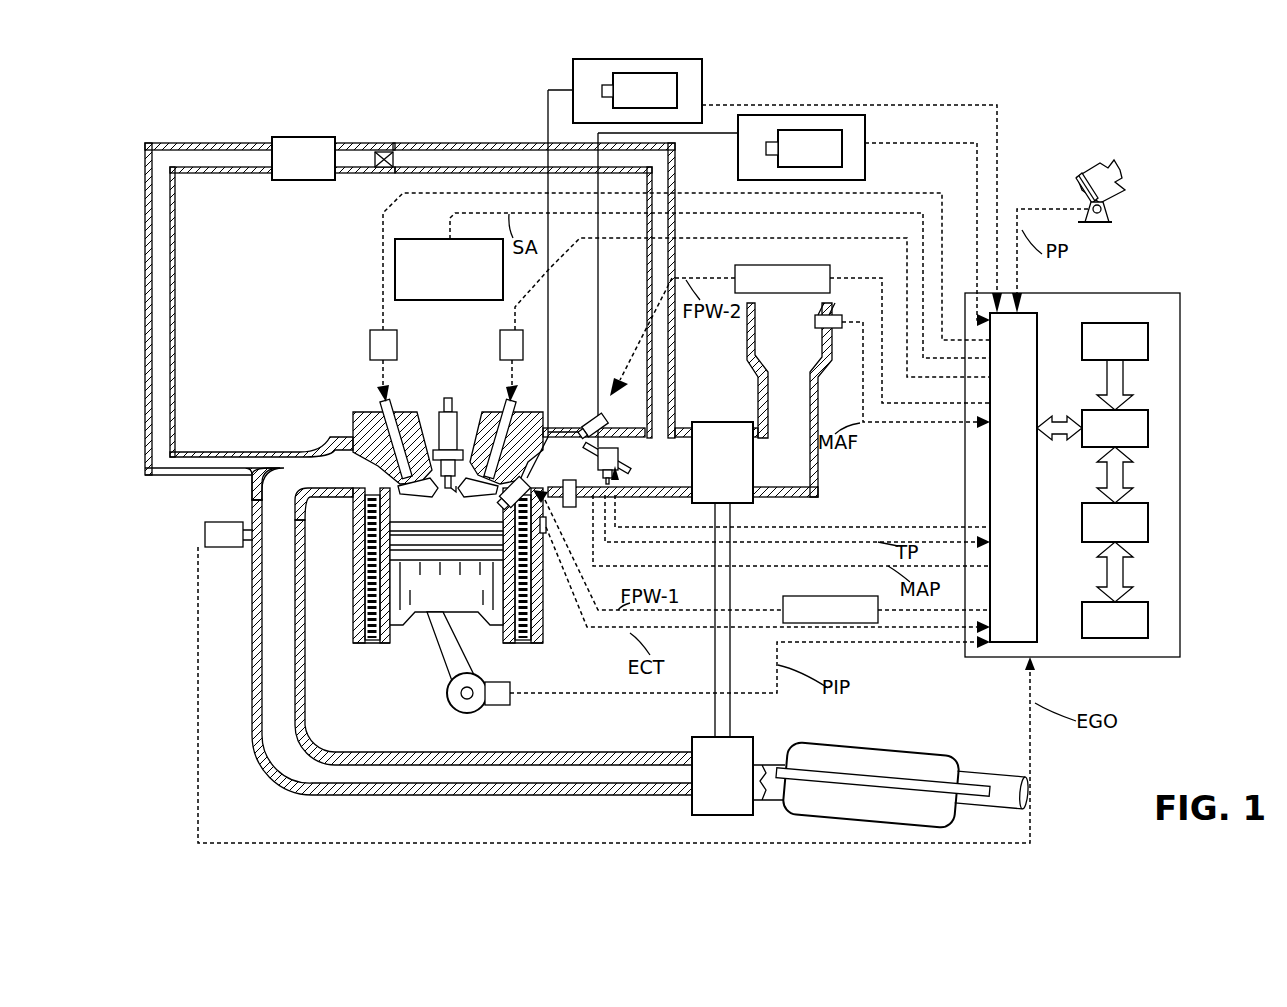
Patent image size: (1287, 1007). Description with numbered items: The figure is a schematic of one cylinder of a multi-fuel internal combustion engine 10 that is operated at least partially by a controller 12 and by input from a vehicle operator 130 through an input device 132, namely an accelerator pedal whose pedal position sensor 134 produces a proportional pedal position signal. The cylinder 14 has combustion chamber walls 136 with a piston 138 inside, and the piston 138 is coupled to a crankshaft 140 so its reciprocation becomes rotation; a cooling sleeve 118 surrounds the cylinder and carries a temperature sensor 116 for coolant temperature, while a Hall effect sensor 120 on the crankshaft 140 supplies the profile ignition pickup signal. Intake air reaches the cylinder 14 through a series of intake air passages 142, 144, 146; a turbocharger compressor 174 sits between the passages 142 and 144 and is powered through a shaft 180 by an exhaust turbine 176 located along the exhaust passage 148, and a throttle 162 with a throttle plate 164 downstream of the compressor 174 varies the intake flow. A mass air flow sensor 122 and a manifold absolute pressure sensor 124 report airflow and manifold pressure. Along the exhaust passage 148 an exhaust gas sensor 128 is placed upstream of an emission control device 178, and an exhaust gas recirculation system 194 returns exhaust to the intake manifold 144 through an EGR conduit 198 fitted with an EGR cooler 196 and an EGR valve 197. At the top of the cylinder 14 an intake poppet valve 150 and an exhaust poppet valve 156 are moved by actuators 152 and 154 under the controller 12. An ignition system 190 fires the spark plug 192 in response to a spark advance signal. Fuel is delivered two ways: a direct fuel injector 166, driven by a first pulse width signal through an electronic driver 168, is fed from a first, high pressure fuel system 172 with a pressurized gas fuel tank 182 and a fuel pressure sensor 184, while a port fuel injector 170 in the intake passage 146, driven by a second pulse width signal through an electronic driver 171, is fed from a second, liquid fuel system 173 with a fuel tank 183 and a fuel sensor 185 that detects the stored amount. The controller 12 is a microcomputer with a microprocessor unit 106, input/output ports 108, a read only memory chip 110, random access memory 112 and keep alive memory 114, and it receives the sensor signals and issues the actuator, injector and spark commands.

The internal combustion engine 10 is at (286, 366).
The controller 12 is at (1180, 298).
The cylinder 14 is at (360, 533).
The microprocessor unit 106 is at (1150, 425).
The input/output ports 108 is at (1040, 315).
The read only memory chip 110 is at (1150, 337).
The random access memory 112 is at (1150, 521).
The keep alive memory 114 is at (1150, 621).
The temperature sensor 116 is at (548, 533).
The cooling sleeve 118 is at (527, 612).
The Hall effect sensor 120 is at (500, 705).
The mass air flow sensor 122 is at (838, 315).
The MAP sensor 124 is at (575, 508).
The exhaust gas sensor 128 is at (205, 525).
The vehicle operator 130 is at (1123, 173).
The input device 132 is at (1080, 186).
The pedal position sensor 134 is at (1110, 208).
The combustion chamber walls 136 is at (393, 643).
The piston 138 is at (432, 608).
The crankshaft 140 is at (458, 710).
The intake air passage 142 is at (776, 347).
The intake passage 144 is at (646, 471).
The intake air passage 146 is at (552, 471).
The exhaust passage 148 is at (312, 479).
The intake poppet valve 150 is at (458, 440).
The actuator 152 is at (500, 342).
The actuator 154 is at (375, 330).
The exhaust poppet valve 156 is at (400, 476).
The throttle 162 is at (612, 448).
The throttle plate 164 is at (582, 432).
The fuel injector 166 is at (521, 489).
The electronic driver 168 is at (783, 602).
The fuel injector 170 is at (594, 420).
The electronic driver 171 is at (735, 275).
The first fuel system 172 is at (702, 66).
The second fuel system 173 is at (835, 115).
The compressor 174 is at (705, 422).
The exhaust turbine 176 is at (692, 810).
The emission control device 178 is at (868, 748).
The shaft 180 is at (732, 708).
The pressurized gas fuel tank 182 is at (645, 73).
The fuel tank 183 is at (788, 130).
The fuel pressure sensor 184 is at (602, 85).
The fuel sensor 185 is at (766, 142).
The ignition system 190 is at (410, 239).
The spark plug 192 is at (450, 300).
The exhaust gas recirculation system 194 is at (130, 166).
The EGR cooler 196 is at (302, 137).
The EGR valve 197 is at (393, 152).
The EGR conduit 198 is at (463, 143).